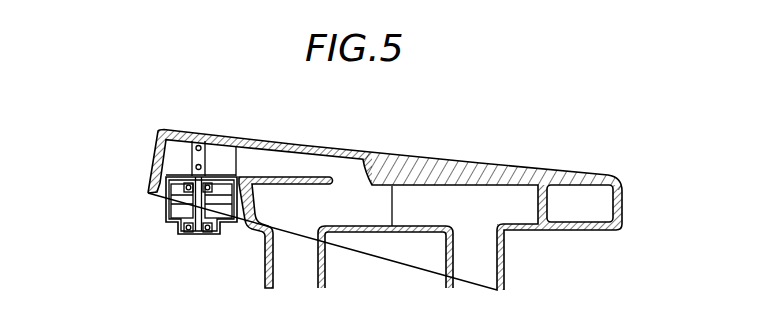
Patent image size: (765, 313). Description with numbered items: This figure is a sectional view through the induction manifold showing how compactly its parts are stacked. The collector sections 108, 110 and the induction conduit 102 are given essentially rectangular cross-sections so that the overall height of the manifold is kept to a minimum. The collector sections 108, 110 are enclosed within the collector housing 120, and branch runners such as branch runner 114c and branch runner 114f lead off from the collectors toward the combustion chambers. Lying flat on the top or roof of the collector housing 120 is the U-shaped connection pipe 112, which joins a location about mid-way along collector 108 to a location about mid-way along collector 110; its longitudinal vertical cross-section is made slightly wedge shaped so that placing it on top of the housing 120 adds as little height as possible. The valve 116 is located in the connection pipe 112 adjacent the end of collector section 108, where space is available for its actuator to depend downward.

The induction conduit 102 is at (590, 213).
The collector 108 is at (346, 207).
The collector 110 is at (438, 212).
The connection pipe 112 is at (272, 160).
The branch runner 114c is at (287, 270).
The branch runner 114f is at (483, 273).
The valve 116 is at (187, 158).
The collector housing 120 is at (405, 157).